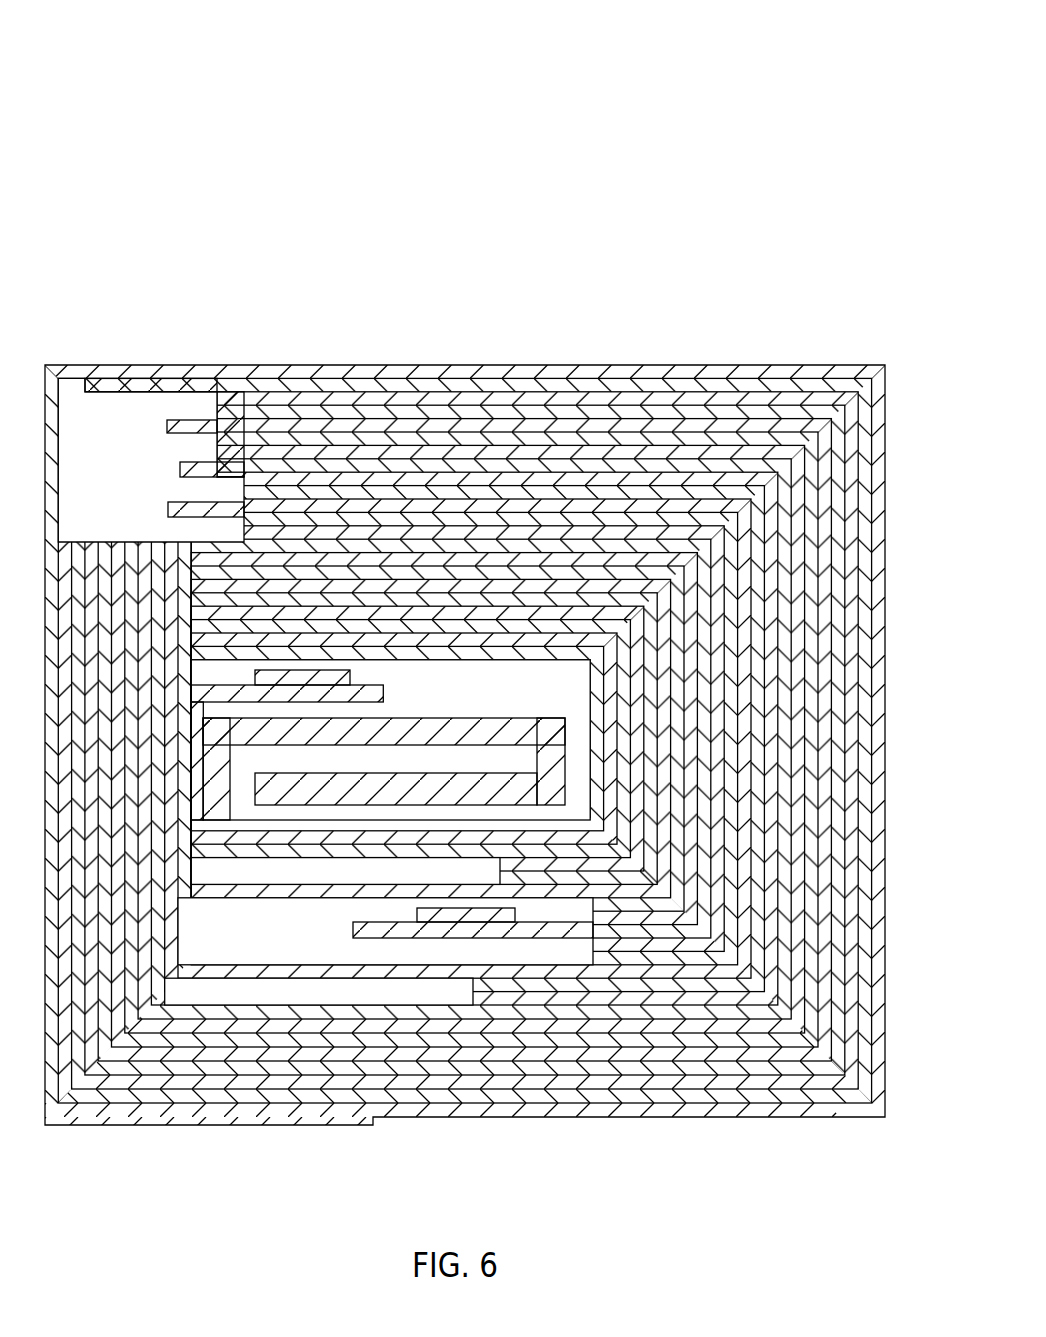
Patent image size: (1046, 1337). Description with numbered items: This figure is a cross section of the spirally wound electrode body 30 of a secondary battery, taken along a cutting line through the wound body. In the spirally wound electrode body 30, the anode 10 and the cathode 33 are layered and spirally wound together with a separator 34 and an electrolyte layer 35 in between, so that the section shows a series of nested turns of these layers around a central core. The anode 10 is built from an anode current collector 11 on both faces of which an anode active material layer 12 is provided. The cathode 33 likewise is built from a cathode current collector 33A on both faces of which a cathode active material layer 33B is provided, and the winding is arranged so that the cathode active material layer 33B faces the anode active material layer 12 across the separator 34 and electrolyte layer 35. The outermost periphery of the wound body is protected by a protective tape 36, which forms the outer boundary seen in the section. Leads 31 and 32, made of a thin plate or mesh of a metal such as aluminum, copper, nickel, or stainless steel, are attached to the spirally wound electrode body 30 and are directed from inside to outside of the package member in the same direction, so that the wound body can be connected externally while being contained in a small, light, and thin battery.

The spirally wound electrode body 30 is at (660, 96).
The anode 10 is at (290, 226).
The anode current collector 11 is at (118, 387).
The anode active material layer 12 is at (262, 540).
The cathode 33 is at (535, 226).
The cathode current collector 33A is at (370, 470).
The cathode active material layer 33B is at (530, 495).
The separator 34 is at (566, 510).
The electrolyte layer 35 is at (683, 510).
The protective tape 36 is at (838, 378).
The lead 31 is at (456, 924).
The lead 32 is at (275, 683).